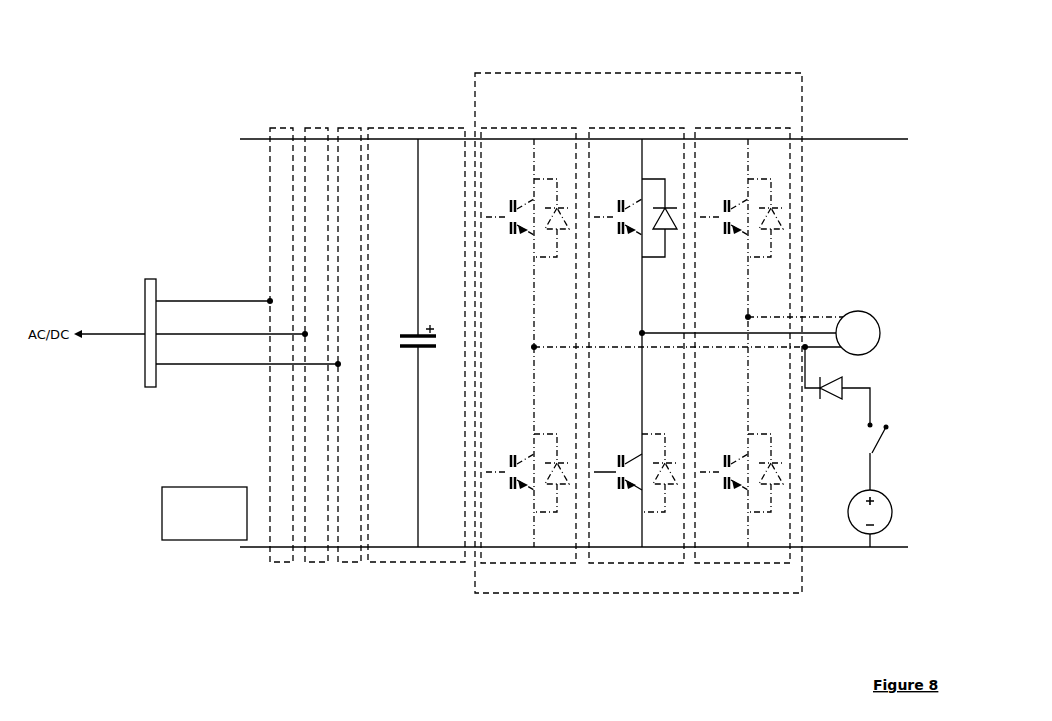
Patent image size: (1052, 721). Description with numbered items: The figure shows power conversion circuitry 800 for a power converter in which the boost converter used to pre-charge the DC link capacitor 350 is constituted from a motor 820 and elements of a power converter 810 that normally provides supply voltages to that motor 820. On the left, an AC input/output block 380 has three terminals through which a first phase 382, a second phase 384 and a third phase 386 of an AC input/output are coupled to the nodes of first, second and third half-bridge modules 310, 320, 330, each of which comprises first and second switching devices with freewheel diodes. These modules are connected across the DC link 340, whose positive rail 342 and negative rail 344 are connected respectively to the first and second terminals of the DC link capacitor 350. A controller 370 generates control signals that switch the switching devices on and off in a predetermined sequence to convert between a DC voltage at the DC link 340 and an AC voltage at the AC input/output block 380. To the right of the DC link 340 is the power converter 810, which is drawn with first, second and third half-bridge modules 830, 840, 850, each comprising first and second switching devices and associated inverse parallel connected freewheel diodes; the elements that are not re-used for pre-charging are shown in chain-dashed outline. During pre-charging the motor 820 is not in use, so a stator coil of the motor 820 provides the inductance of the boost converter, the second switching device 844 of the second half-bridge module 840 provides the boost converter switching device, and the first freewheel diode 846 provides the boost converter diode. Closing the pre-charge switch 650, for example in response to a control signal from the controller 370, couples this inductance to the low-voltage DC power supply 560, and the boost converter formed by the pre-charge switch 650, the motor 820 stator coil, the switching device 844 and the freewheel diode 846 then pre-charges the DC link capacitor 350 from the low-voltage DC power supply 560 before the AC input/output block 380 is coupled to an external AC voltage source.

The power conversion circuitry 800 is at (121, 86).
The power converter 810 is at (755, 73).
The motor 820 is at (855, 313).
The first half-bridge module 830 is at (540, 128).
The second half-bridge module 840 is at (712, 323).
The third half-bridge module 850 is at (757, 128).
The second switching device 844 is at (618, 493).
The first freewheel diode 846 is at (664, 207).
The first half-bridge module 310 is at (278, 127).
The second half-bridge module 320 is at (313, 127).
The third half-bridge module 330 is at (350, 127).
The DC link 340 is at (410, 128).
The positive rail 342 is at (449, 141).
The negative rail 344 is at (430, 546).
The DC link capacitor 350 is at (432, 347).
The controller 370 is at (204, 513).
The AC input/output block 380 is at (150, 280).
The first phase 382 is at (178, 301).
The second phase 384 is at (203, 334).
The third phase 386 is at (232, 364).
The low-voltage DC power supply 560 is at (855, 505).
The pre-charge switch 650 is at (878, 454).